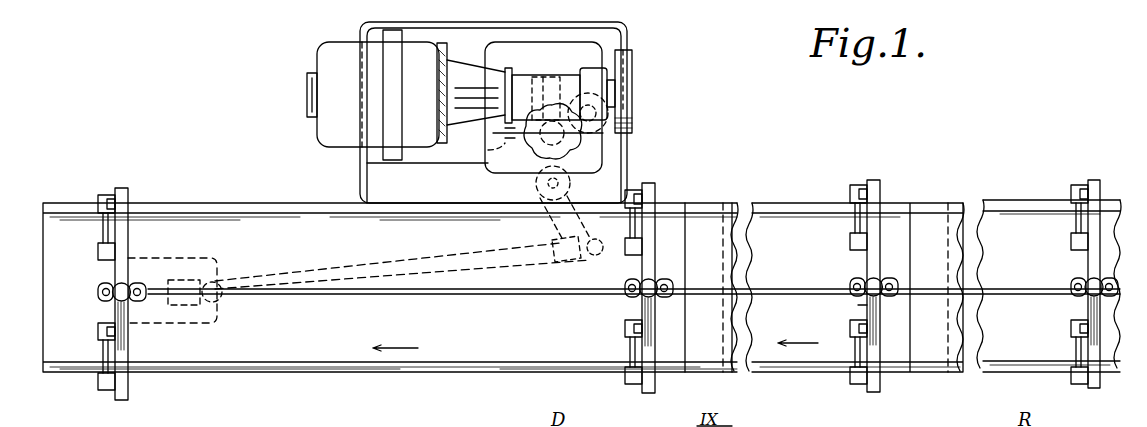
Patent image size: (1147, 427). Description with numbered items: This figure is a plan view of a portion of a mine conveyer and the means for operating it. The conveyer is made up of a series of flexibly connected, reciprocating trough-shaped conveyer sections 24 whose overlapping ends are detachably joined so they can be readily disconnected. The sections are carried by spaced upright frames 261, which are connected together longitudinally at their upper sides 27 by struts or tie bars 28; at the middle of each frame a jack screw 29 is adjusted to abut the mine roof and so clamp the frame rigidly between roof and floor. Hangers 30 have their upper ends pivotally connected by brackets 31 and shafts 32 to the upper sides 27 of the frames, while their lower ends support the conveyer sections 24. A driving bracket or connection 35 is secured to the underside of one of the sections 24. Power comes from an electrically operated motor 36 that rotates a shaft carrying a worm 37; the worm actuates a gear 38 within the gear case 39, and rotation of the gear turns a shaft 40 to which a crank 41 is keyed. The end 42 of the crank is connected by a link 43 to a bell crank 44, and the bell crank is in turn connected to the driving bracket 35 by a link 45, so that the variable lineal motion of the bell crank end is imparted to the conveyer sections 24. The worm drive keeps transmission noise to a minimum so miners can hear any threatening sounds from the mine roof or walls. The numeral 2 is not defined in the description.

The conveyor 2 is at (880, 193).
The conveyer sections 24 is at (310, 372).
The upper sides of frames 27 is at (128, 244).
The struts or tie bars 28 is at (324, 297).
The jack screw 29 is at (98, 292).
The hangers 30 is at (98, 201).
The brackets 31 is at (104, 192).
The shafts 32 is at (103, 229).
The driving bracket or connection 35 is at (216, 268).
The motor 36 is at (333, 57).
The worm 37 is at (556, 75).
The gear 38 is at (546, 78).
The gear case 39 is at (580, 72).
The shaft 40 is at (493, 133).
The crank 41 is at (488, 152).
The end of crank 42 is at (512, 165).
The link 43 is at (632, 116).
The bell crank 44 is at (606, 149).
The link 45 is at (410, 270).
The frames 261 is at (866, 304).